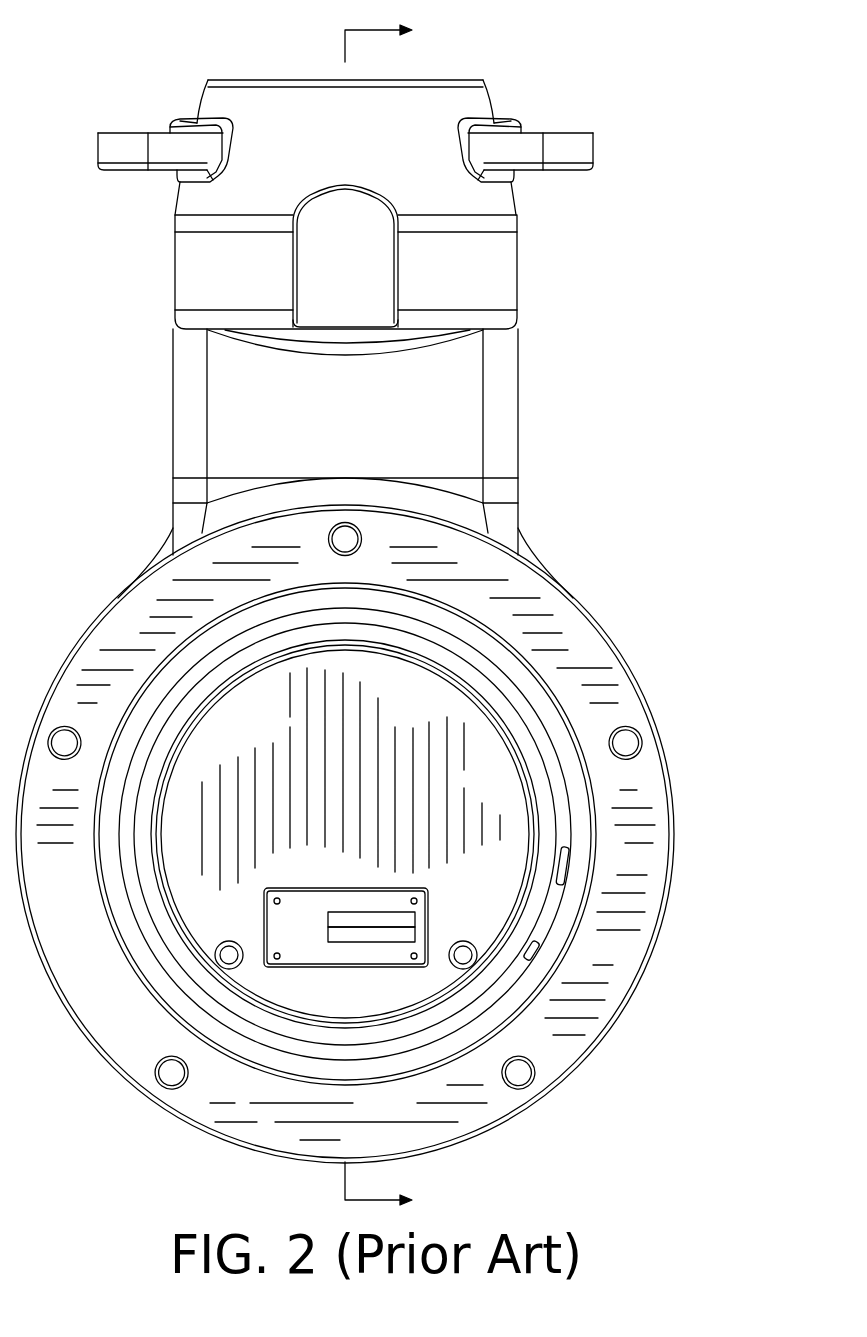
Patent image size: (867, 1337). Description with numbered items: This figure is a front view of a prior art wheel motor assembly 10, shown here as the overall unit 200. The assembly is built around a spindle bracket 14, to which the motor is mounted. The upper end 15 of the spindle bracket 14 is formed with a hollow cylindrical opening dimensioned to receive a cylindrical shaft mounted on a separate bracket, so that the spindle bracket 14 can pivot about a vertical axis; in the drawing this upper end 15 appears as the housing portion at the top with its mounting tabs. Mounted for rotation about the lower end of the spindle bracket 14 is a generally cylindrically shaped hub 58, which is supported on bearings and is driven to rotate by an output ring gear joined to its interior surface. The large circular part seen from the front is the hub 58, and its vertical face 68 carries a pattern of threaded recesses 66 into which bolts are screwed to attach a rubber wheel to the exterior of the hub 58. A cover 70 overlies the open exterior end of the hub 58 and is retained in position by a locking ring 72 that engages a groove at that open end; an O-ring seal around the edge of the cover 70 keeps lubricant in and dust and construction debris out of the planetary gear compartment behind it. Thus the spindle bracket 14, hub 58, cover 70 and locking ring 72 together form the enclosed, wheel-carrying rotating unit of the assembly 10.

The wheel drive assembly 200 is at (602, 63).
The wheel motor assembly 10 is at (586, 373).
The upper end of spindle bracket 15 is at (215, 93).
The spindle bracket 14 is at (174, 381).
The hub 58 is at (218, 1138).
The vertical face of hub 68 is at (523, 608).
The threaded recesses 66 is at (634, 745).
The locking ring 72 is at (512, 980).
The cover 70 is at (505, 888).